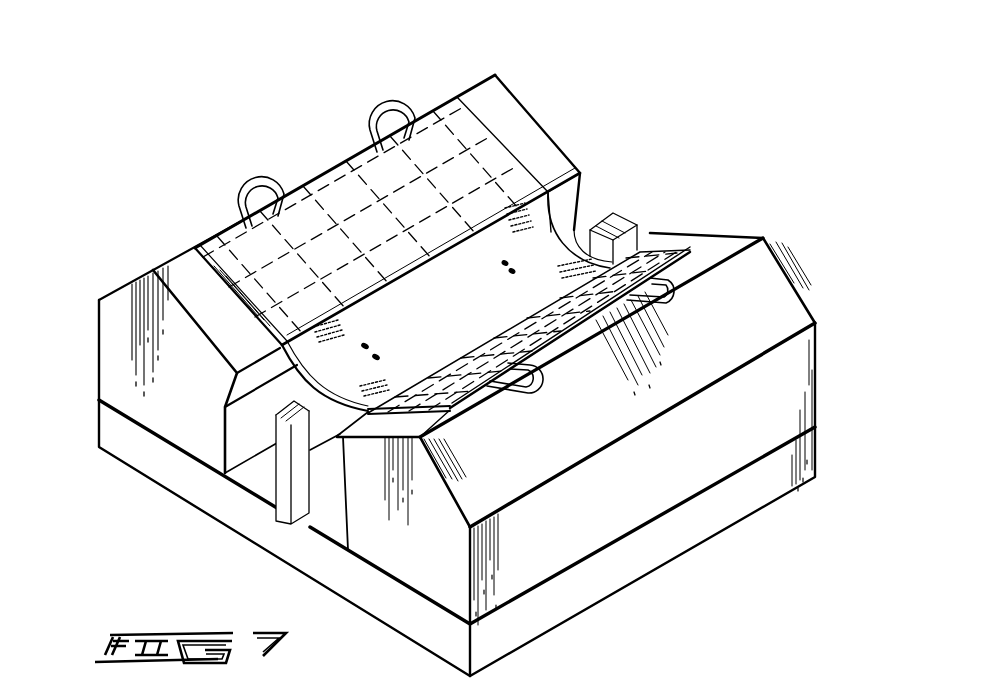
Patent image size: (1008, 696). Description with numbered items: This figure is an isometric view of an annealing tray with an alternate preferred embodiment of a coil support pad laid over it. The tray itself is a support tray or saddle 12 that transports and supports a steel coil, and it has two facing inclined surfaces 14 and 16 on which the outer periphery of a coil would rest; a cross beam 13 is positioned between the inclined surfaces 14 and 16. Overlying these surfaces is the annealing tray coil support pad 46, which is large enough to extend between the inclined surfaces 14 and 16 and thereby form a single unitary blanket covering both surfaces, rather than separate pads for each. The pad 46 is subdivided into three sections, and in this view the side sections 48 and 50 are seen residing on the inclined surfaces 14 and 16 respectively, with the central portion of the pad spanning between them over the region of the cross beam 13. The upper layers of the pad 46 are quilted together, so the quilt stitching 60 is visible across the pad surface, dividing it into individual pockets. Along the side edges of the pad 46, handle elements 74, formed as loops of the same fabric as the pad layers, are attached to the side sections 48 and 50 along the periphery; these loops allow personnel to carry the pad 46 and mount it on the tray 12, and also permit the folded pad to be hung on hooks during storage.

The support tray 12 is at (817, 378).
The cross beam 13 is at (320, 425).
The inclined surface 14 is at (203, 325).
The inclined surface 16 is at (717, 236).
The annealing tray coil support pad 46 is at (448, 231).
The side section 48 is at (403, 243).
The side section 50 is at (642, 250).
The quilt stitching 60 is at (320, 230).
The handle element 74 is at (237, 193).